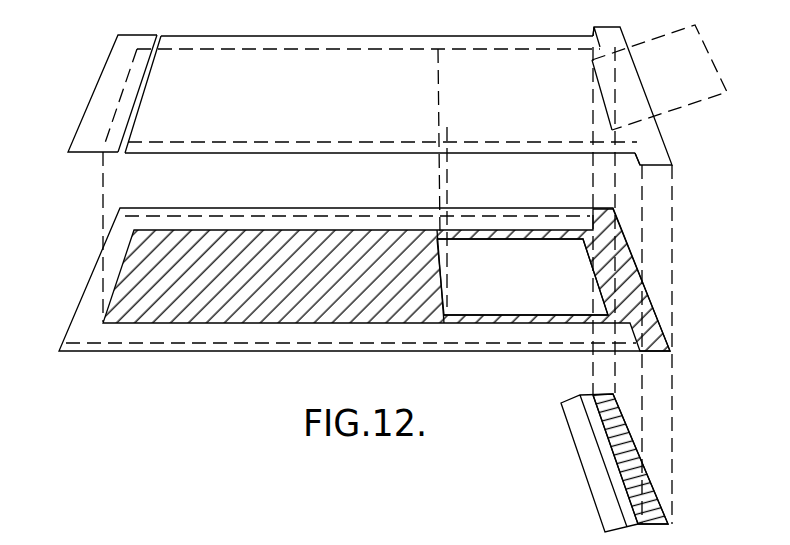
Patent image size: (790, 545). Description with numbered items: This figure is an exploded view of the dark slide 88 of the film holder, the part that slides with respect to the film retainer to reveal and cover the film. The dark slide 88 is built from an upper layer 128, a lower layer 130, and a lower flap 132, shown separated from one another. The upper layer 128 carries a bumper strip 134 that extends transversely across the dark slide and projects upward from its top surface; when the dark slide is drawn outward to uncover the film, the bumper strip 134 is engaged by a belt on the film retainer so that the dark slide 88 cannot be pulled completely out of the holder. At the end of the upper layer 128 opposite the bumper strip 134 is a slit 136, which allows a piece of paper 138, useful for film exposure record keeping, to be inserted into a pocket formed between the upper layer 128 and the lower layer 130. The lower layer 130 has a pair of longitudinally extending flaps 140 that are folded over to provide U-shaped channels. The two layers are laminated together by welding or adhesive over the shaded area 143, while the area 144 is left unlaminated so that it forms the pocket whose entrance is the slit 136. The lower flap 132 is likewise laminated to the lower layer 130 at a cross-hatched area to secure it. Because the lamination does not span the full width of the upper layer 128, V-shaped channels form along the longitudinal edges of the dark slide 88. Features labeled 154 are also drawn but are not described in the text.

The dark slide 88 is at (95, 50).
The upper layer 128 is at (293, 36).
The lower layer 130 is at (385, 352).
The lower flap 132 is at (585, 449).
The bumper strip 134 is at (143, 98).
The slit 136 is at (604, 107).
The piece of paper 138 is at (690, 108).
The longitudinally extending flaps 140 is at (405, 216).
The shaded area of lamination 143 is at (292, 277).
The unlaminated area 144 is at (483, 268).
The notch 154 is at (600, 27).